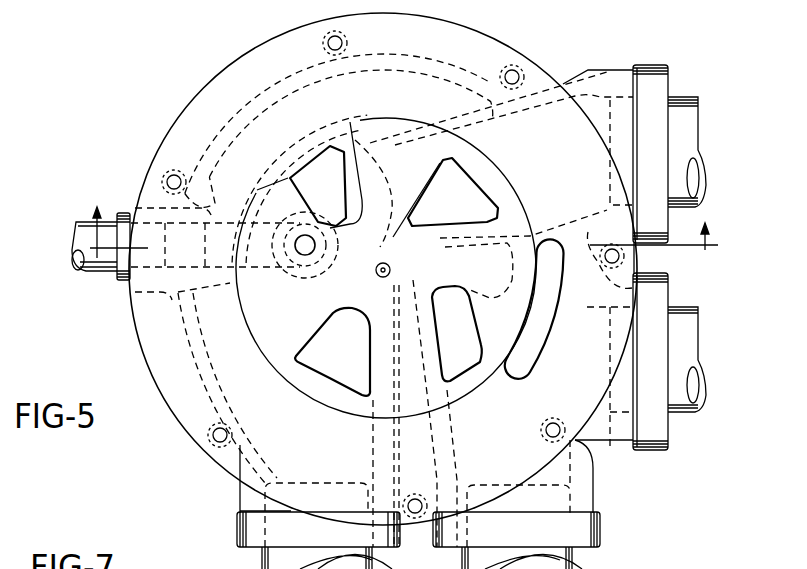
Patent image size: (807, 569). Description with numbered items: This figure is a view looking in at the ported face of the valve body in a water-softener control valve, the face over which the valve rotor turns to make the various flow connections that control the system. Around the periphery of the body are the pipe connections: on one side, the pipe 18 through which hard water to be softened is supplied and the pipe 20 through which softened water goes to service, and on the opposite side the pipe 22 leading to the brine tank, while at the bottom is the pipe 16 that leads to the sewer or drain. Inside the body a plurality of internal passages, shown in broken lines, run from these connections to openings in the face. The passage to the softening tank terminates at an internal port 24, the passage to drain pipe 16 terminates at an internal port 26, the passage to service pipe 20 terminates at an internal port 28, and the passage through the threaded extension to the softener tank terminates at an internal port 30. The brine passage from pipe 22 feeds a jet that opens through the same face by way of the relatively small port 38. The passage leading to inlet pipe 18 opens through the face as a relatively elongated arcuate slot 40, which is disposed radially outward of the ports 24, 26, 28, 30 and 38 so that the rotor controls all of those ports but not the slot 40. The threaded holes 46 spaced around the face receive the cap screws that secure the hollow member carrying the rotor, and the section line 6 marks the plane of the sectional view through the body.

The section line 6- 6 is at (404, 218).
The pipe 16 is at (578, 558).
The pipe 18 is at (690, 327).
The pipe 20 is at (670, 97).
The pipe 22 is at (97, 262).
The internal port 24 is at (320, 316).
The internal port 26 is at (437, 352).
The internal port 28 is at (443, 161).
The internal port 30 is at (313, 148).
The port 38 is at (305, 245).
The arcuate slot 40 is at (533, 360).
The threaded holes 46 is at (174, 175).